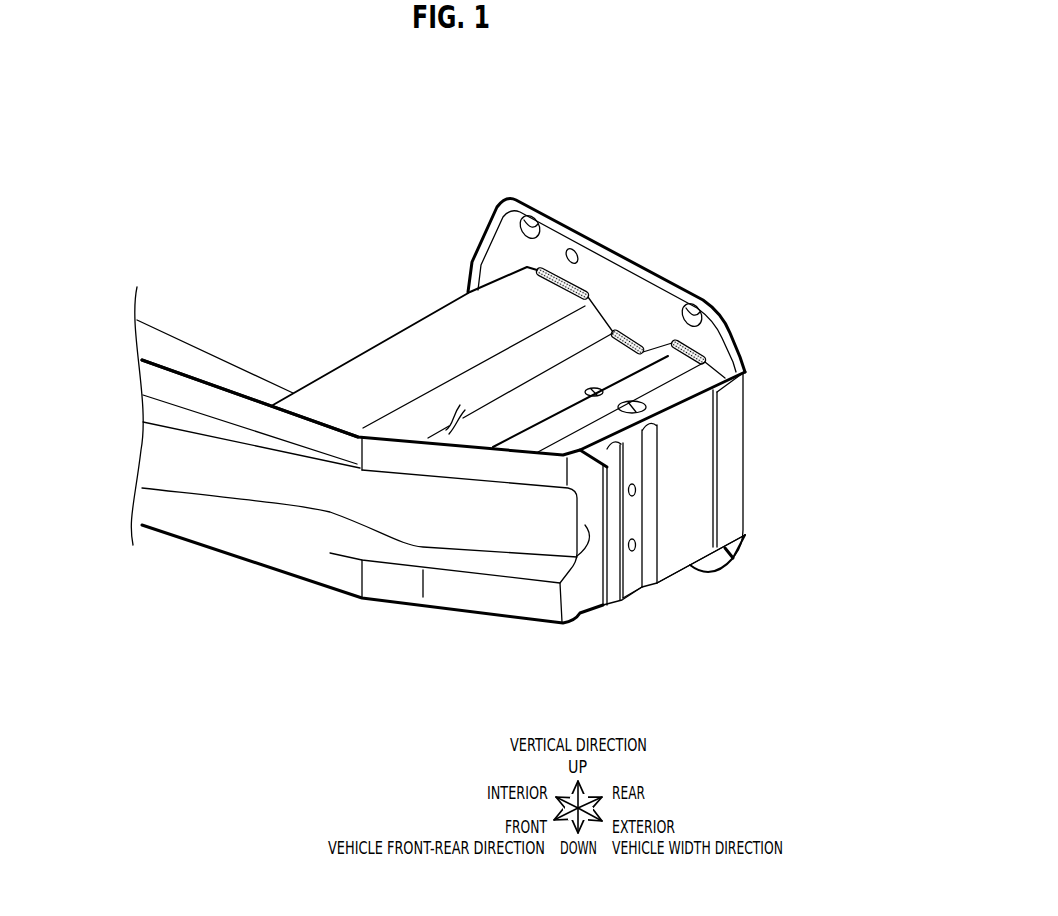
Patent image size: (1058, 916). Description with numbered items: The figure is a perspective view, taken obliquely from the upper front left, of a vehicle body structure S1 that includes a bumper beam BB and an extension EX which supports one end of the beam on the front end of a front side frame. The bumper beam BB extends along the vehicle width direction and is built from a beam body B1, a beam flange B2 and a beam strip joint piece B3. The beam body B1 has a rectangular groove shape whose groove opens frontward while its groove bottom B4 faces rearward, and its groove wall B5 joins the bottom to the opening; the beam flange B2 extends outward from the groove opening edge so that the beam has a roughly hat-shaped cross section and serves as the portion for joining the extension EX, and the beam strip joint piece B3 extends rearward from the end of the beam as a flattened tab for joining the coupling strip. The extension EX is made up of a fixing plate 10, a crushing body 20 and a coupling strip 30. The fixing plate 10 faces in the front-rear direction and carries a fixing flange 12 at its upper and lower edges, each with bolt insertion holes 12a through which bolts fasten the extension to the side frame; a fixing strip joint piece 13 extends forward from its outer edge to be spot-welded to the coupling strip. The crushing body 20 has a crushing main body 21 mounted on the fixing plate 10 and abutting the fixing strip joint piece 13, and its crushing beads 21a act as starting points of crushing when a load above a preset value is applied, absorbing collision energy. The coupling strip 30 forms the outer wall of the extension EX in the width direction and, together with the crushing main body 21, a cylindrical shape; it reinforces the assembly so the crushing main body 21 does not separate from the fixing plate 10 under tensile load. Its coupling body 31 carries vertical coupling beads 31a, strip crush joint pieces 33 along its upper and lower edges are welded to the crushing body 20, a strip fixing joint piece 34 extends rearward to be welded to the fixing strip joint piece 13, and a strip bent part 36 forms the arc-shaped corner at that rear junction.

The fixing plate 10 is at (514, 195).
The fixing flange 12 is at (632, 297).
The bolt insertion hole 12a is at (534, 222).
The fixing strip joint piece 13 is at (740, 552).
The crushing body 20 is at (320, 380).
The crushing main body 21 is at (388, 356).
The crushing bead 21a is at (640, 402).
The coupling strip 30 is at (704, 590).
The coupling body 31 is at (697, 507).
The coupling bead 31a is at (652, 590).
The strip crush joint piece 33 is at (688, 413).
The strip fixing joint piece 34 is at (728, 447).
The strip bent part 36 is at (745, 463).
The bumper beam BB is at (190, 568).
The beam body B1 is at (160, 336).
The beam flange B2 is at (182, 390).
The beam strip joint piece B3 is at (577, 560).
The groove bottom B4 is at (322, 490).
The groove wall B5 is at (232, 376).
The extension EX is at (415, 297).
The vehicle body structure S1 is at (348, 172).